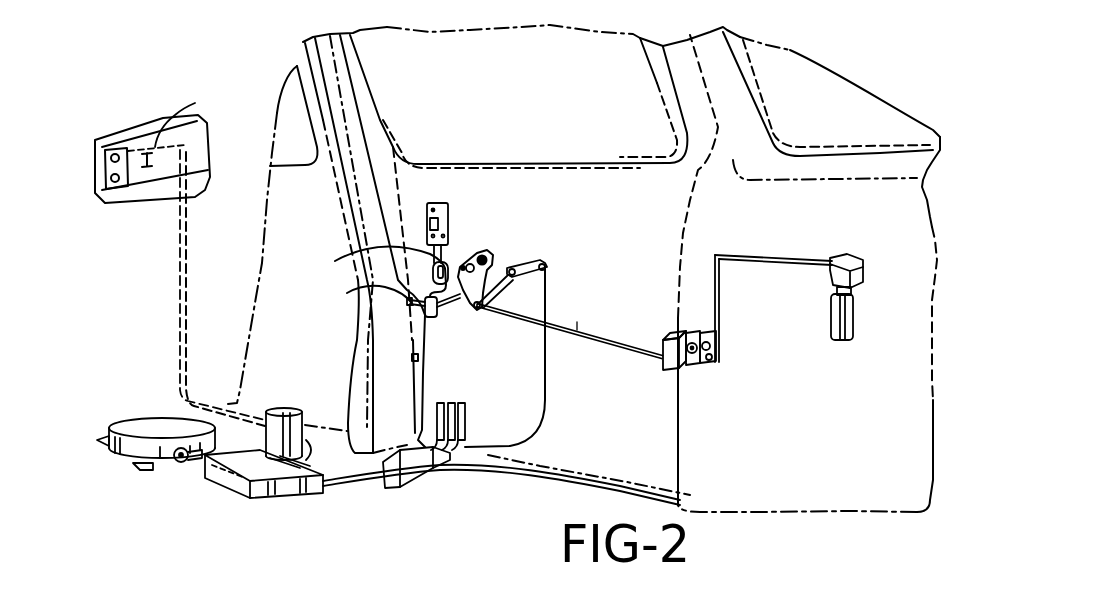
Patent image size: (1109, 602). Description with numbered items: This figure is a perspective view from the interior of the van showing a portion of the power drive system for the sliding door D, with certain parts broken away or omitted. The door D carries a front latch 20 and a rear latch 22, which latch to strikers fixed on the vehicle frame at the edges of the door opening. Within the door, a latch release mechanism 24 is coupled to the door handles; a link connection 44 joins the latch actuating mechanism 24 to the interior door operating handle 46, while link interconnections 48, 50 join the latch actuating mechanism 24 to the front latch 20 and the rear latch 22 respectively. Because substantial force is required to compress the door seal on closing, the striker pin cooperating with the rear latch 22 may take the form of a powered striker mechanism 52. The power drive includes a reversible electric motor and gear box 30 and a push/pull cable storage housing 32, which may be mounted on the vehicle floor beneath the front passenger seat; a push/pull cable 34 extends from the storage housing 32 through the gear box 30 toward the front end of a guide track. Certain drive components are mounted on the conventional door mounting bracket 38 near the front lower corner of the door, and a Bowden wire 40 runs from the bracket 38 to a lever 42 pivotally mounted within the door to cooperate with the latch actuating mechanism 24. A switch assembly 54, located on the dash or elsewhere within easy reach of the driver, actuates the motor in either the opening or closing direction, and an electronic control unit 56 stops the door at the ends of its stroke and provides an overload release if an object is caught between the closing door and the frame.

The sliding door D is at (580, 182).
The front latch 20 is at (347, 293).
The rear latch 22 is at (660, 368).
The latch release mechanism 24 is at (466, 262).
The reversible electric motor and gear box 30 is at (247, 480).
The push/pull cable storage housing 32 is at (141, 418).
The push/pull cable 34 is at (343, 487).
The door mounting bracket 38 is at (425, 473).
The Bowden wire 40 is at (545, 302).
The lever 42 is at (512, 266).
The link connection 44 is at (335, 261).
The interior door operating handle 46 is at (450, 216).
The link interconnection 48 is at (453, 308).
The link interconnection 50 is at (577, 330).
The powered striker mechanism 52 is at (733, 342).
The switch assembly 54 is at (125, 139).
The electronic control unit 56 is at (195, 103).